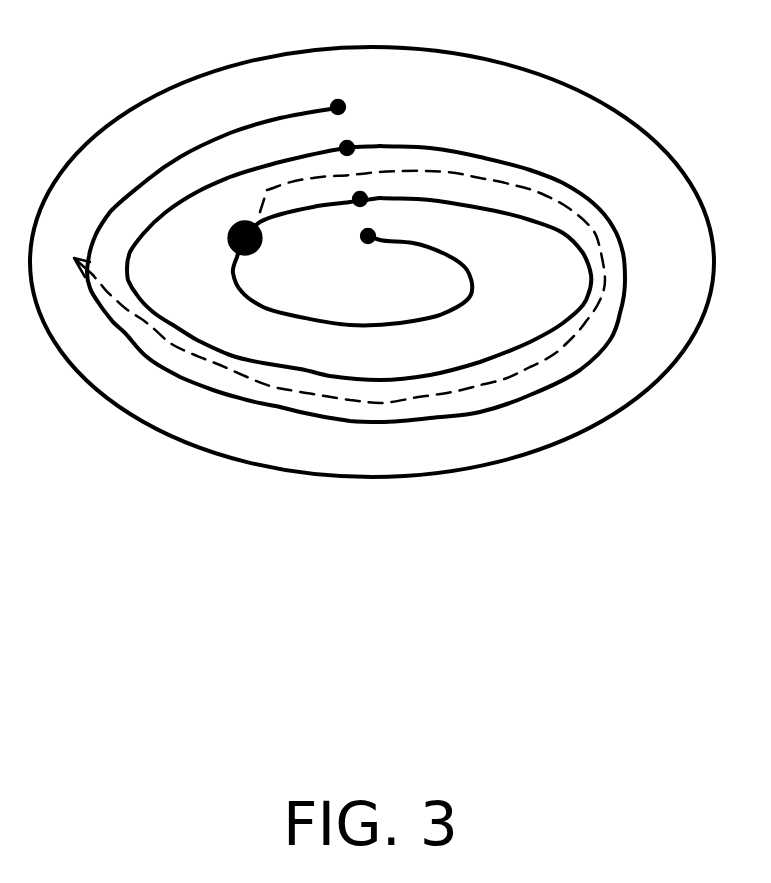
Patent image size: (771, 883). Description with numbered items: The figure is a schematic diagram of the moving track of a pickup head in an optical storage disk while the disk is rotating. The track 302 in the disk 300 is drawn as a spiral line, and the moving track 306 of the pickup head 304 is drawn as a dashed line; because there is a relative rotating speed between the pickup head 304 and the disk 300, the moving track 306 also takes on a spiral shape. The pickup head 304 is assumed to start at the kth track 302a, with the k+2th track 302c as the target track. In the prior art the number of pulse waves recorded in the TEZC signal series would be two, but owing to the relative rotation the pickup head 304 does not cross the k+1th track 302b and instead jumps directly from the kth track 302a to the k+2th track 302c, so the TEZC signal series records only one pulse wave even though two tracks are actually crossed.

The disk 300 is at (140, 519).
The track 302 is at (356, 328).
The kth track 302a is at (350, 324).
The k+1th track 302b is at (477, 360).
The k+2th track 302c is at (300, 412).
The pickup head 304 is at (262, 230).
The moving track 306 is at (517, 185).